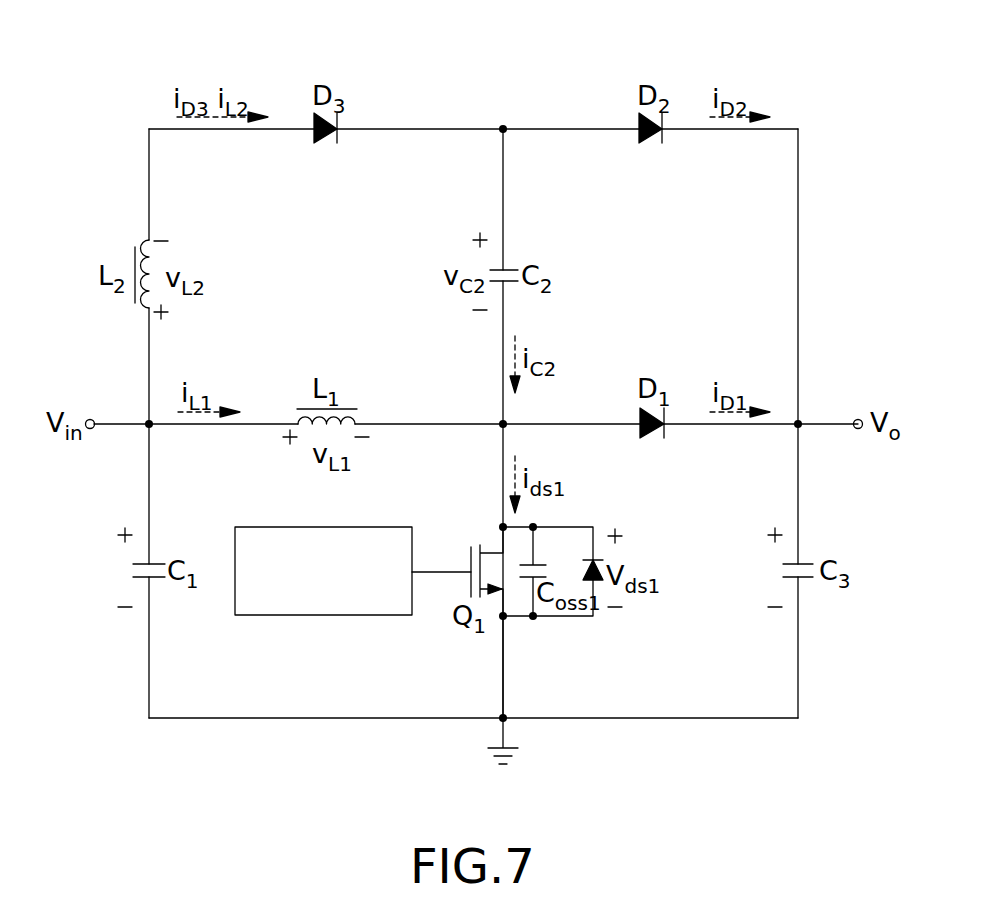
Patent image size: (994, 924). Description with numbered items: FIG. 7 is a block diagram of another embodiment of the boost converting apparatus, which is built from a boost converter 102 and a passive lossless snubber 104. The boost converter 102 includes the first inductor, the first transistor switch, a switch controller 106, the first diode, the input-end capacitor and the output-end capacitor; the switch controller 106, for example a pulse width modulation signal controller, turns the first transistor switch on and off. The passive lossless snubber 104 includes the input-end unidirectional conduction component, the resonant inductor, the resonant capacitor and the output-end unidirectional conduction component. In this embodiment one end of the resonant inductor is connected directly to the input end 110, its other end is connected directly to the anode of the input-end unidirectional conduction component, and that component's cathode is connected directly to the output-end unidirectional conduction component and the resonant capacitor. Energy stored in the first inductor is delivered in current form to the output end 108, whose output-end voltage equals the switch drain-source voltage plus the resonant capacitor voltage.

The boost converter 102 is at (470, 758).
The passive lossless snubber 104 is at (471, 92).
The switch controller 106 is at (322, 530).
The output end 108 is at (858, 418).
The input end 110 is at (90, 418).